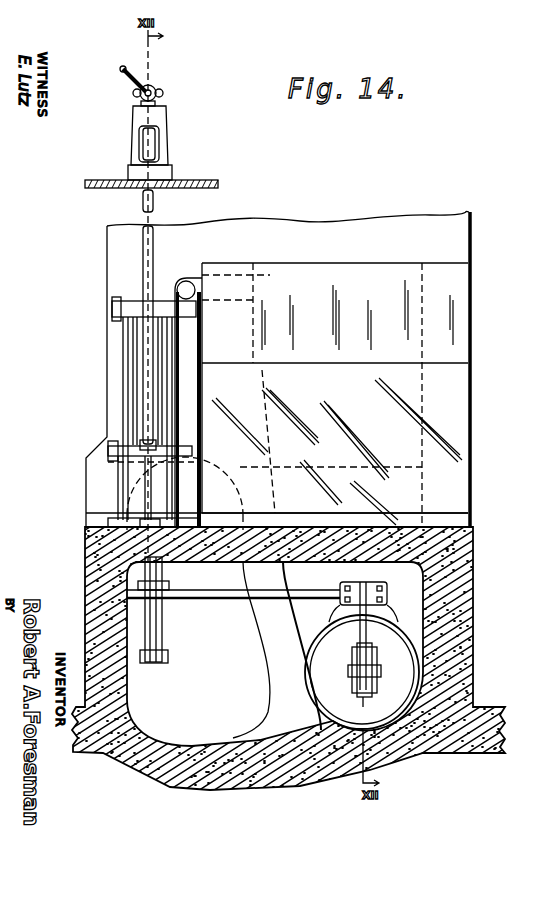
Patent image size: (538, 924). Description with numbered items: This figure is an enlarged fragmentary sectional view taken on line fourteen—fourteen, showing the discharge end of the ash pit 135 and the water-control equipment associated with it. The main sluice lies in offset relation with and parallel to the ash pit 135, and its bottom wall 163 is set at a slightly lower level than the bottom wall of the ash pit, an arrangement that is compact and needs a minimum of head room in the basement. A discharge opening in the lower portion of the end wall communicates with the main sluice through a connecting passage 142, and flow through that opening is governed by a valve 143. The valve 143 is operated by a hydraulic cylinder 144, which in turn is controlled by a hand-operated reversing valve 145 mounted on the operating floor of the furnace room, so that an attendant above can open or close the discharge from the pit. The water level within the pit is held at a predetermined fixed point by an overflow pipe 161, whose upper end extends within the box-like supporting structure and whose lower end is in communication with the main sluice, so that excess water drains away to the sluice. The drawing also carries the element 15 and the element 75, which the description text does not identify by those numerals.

The concrete housing 15 is at (44, 603).
The cover plate 75 is at (116, 181).
The ash pit 135 is at (450, 264).
The connecting passage 142 is at (412, 595).
The valve 143 is at (405, 628).
The hydraulic cylinder 144 is at (140, 385).
The hand-operated reversing valve 145 is at (152, 88).
The overflow pipe 161 is at (184, 280).
The bottom wall 163 is at (190, 746).